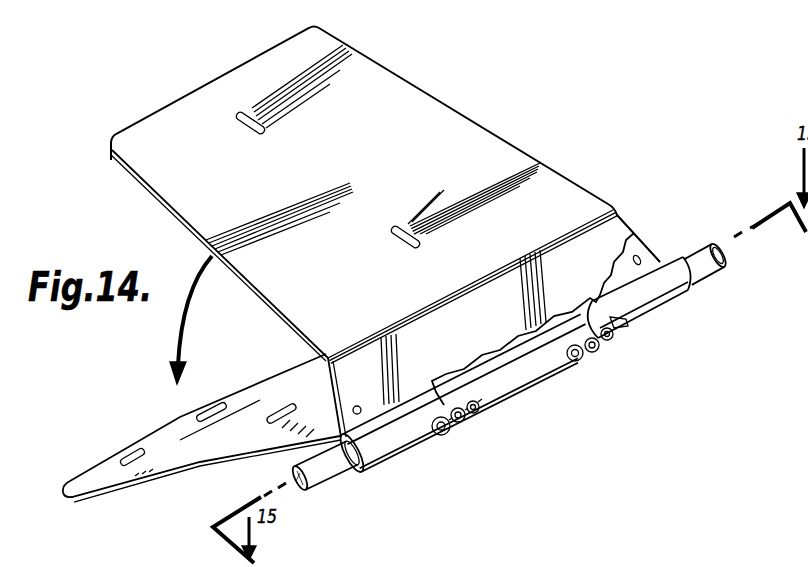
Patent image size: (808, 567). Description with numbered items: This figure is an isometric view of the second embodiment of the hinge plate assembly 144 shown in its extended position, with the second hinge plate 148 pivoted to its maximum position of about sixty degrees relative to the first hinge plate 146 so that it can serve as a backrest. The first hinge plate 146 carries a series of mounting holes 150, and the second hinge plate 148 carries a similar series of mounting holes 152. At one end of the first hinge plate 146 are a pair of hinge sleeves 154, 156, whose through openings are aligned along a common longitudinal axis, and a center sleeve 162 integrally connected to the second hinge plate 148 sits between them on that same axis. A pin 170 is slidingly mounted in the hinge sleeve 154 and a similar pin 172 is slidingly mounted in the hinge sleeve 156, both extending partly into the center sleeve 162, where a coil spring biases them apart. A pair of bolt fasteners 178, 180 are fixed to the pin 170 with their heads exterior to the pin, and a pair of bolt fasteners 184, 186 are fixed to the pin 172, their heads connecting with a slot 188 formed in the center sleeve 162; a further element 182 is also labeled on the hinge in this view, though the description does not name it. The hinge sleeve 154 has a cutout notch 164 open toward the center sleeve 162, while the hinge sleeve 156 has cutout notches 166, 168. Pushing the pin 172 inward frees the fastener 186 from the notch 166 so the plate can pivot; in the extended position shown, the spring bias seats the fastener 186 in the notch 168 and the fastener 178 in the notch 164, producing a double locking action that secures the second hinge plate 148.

The hinge plate assembly 144 is at (557, 114).
The first hinge plate 146 is at (213, 464).
The second hinge plate 148 is at (430, 98).
The mounting holes 150 is at (128, 452).
The mounting holes 152 is at (246, 116).
The hinge sleeve 154 is at (398, 455).
The hinge sleeve 156 is at (683, 304).
The center sleeve 162 is at (523, 388).
The cutout notch 164 is at (463, 427).
The cutout notch 166 is at (634, 233).
The cutout notch 168 is at (627, 333).
The pin 170 is at (327, 478).
The pin 172 is at (720, 275).
The bolt fastener 178 is at (449, 430).
The bolt fastener 180 is at (470, 418).
The bolt 182 is at (479, 412).
The bolt fastener 184 is at (605, 346).
The bolt fastener 186 is at (620, 345).
The slot 188 is at (584, 355).